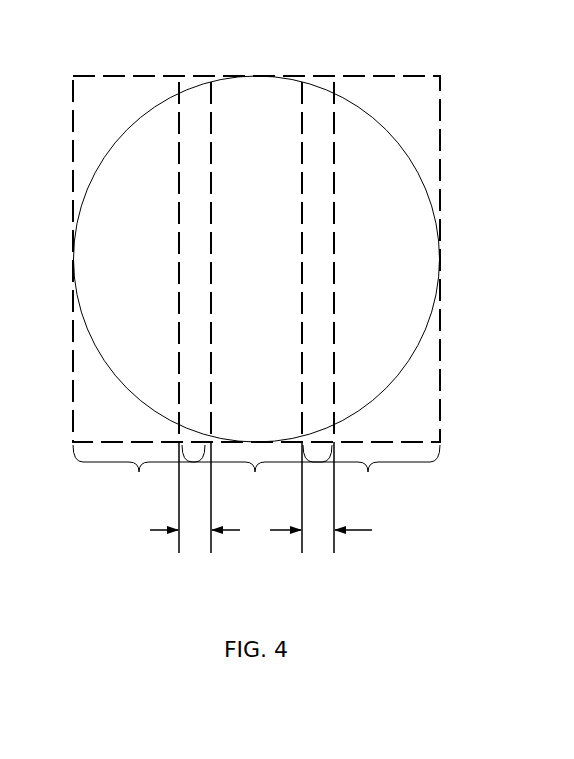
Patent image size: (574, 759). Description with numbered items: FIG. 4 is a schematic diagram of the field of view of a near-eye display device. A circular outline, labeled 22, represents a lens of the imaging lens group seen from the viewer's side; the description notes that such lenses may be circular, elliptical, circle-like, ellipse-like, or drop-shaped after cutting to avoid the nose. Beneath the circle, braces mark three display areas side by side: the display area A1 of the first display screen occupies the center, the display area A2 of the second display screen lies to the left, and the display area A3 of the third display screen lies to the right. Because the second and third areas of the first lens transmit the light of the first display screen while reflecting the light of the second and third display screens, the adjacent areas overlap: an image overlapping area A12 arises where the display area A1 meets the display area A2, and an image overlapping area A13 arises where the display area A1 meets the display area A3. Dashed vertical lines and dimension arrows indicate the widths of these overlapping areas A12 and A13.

The circular region 22 is at (393, 137).
The display area of the first display screen A1 is at (257, 289).
The display area of the second display screen A2 is at (139, 289).
The display area of the third display screen A3 is at (371, 289).
The image overlapping area A12 is at (195, 513).
The image overlapping area A13 is at (321, 513).